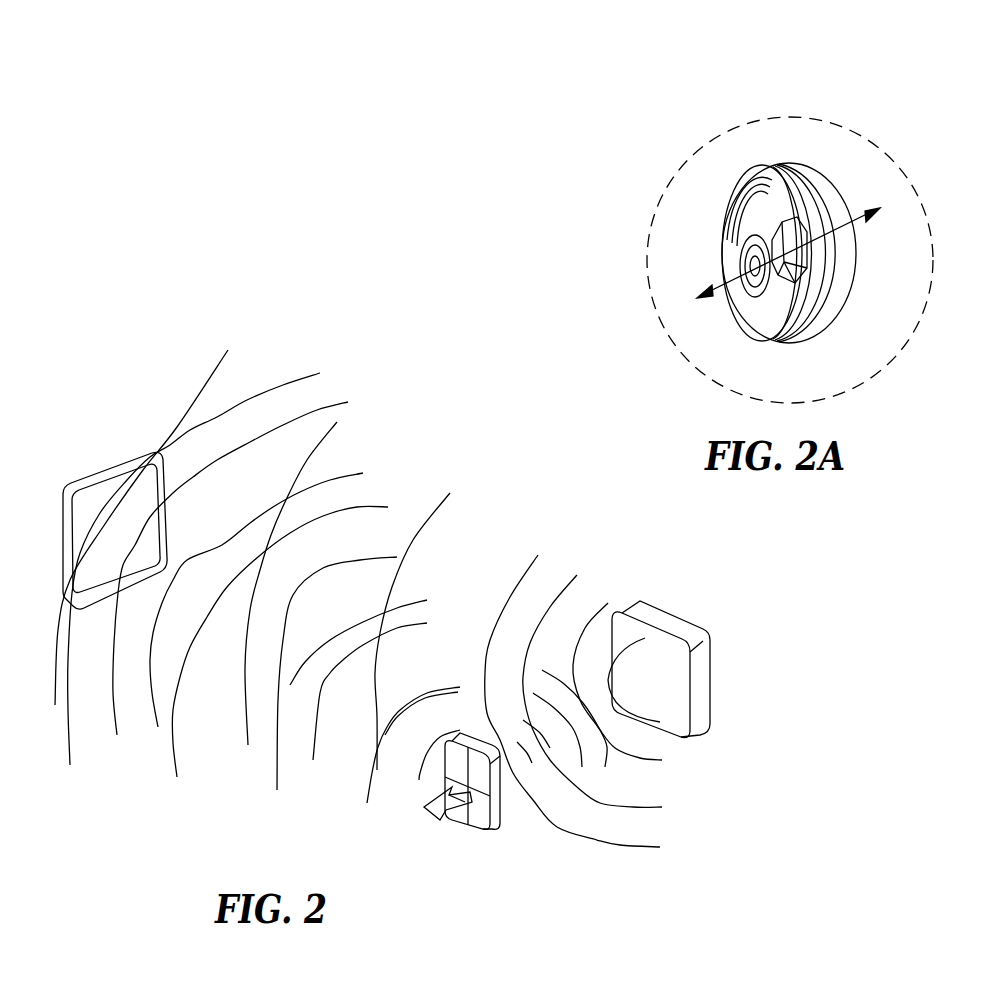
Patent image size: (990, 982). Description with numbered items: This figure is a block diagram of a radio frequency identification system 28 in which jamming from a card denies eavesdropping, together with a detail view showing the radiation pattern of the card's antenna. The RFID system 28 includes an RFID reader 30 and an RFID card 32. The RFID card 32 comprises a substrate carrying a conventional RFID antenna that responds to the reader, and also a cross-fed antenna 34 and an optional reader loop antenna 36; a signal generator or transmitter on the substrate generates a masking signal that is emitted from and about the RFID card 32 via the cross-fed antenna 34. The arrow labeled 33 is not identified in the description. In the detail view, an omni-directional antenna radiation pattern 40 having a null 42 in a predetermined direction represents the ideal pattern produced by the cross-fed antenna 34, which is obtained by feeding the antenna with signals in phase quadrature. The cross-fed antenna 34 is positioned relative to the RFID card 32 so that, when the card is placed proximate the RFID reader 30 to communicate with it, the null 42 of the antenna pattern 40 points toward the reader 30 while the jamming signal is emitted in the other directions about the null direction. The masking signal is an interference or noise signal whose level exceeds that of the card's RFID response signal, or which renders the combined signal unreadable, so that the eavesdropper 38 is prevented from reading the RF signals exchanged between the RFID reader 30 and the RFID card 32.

In FIG. 2, the radio frequency identification (RFID) system 28 is at (405, 406).
In FIG. 2, the RFID reader 30 is at (703, 668).
In FIG. 2, the RFID card 32 is at (505, 878).
In FIG. 2, the direction arrow 33 is at (465, 818).
In FIG. 2, the cross-fed antenna 34 is at (480, 738).
In FIG. 2, the reader loop antenna 36 is at (500, 802).
In FIG. 2, the eavesdropper 38 is at (168, 528).
In FIG. 2A, the omni-directional antenna radiation pattern 40 is at (885, 128).
In FIG. 2A, the null 42 is at (697, 305).